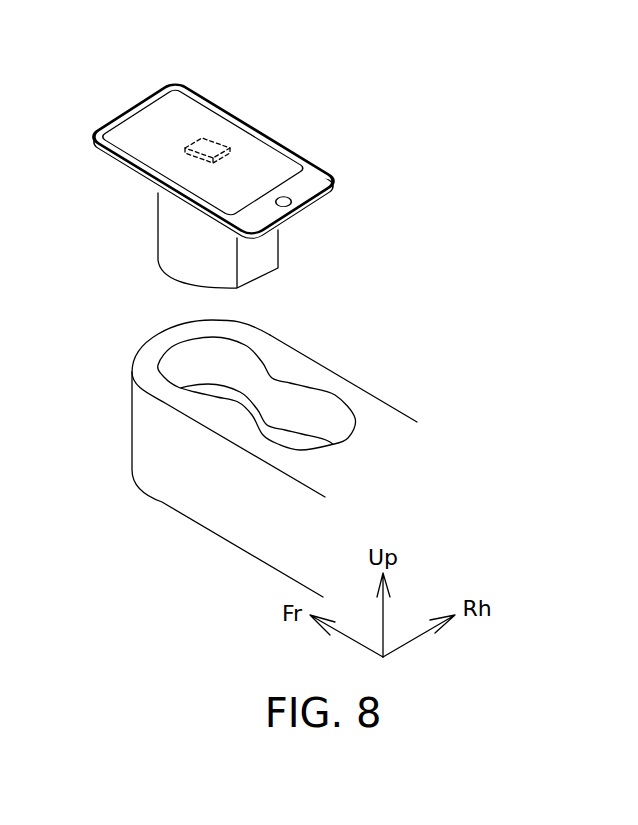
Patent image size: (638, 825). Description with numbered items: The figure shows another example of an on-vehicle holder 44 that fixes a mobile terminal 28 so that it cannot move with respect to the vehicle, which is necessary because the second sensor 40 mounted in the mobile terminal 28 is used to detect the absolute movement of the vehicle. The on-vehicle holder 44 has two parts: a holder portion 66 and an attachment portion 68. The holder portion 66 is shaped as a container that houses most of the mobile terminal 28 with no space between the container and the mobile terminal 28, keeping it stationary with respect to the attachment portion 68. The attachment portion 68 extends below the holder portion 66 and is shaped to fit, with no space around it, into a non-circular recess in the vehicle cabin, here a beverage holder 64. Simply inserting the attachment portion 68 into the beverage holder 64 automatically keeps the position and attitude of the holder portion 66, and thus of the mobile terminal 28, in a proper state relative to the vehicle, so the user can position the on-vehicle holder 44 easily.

The mobile terminal 28 is at (270, 157).
The second sensor 40 is at (213, 141).
The on-vehicle holder 44 is at (197, 191).
The beverage holder 64 is at (315, 410).
The holder portion 66 is at (99, 152).
The attachment portion 68 is at (168, 230).